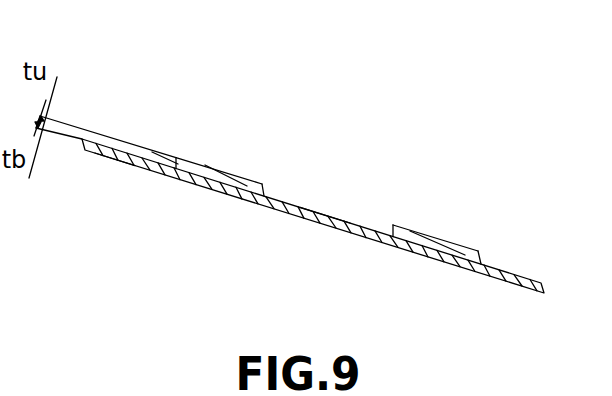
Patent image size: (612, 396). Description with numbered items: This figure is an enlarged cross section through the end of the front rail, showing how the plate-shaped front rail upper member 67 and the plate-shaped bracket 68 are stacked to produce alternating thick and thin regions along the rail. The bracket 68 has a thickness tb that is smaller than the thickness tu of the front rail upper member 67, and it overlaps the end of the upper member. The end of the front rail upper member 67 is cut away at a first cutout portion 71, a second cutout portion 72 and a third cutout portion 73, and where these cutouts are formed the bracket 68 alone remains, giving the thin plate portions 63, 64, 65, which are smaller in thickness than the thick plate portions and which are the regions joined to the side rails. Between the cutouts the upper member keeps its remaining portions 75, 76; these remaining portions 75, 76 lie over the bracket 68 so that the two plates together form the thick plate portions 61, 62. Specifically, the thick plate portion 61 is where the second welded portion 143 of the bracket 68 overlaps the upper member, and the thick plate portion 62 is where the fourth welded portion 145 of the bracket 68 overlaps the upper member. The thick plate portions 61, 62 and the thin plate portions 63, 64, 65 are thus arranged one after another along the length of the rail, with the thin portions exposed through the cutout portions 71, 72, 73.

The thin plate portion 63 is at (531, 279).
The thin plate portion 65 is at (118, 139).
The bracket 68 is at (132, 165).
The third cutout portion 73 is at (158, 161).
The thick plate portion 62 is at (289, 77).
The remaining portion 76 is at (242, 175).
The fourth welded portion 145 is at (197, 165).
The front rail upper member 67 is at (176, 157).
The second cutout portion 72 is at (264, 188).
The thin plate portion 64 is at (323, 212).
The thick plate portion 61 is at (525, 138).
The remaining portion 75 is at (472, 240).
The second welded portion 143 is at (428, 234).
The first cutout portion 71 is at (482, 259).